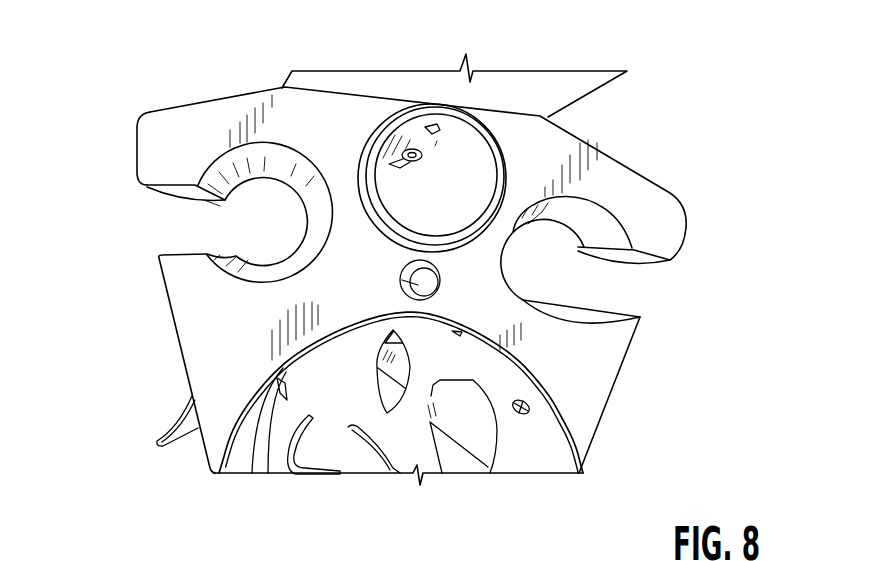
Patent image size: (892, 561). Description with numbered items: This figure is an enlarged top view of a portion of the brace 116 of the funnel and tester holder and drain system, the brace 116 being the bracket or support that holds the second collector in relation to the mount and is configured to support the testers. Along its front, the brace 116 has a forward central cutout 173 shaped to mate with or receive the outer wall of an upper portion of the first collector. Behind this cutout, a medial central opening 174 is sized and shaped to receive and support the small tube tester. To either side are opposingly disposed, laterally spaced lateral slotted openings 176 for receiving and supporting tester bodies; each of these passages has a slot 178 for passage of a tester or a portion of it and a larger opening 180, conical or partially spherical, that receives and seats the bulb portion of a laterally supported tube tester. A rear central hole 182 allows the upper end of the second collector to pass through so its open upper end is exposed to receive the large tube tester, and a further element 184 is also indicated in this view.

The brace 116 is at (522, 133).
The forward central cutout 173 is at (345, 333).
The medial central opening 174 is at (403, 284).
The lateral slotted openings 176 is at (274, 162).
The slot 178 is at (177, 184).
The larger opening 180 is at (233, 163).
The rear central hole 182 is at (413, 104).
The fan 184 is at (480, 560).